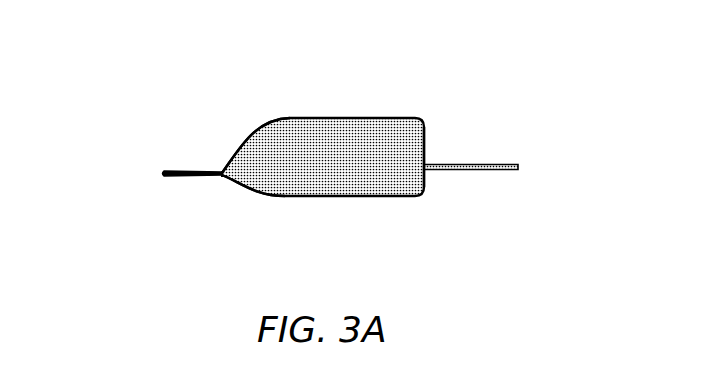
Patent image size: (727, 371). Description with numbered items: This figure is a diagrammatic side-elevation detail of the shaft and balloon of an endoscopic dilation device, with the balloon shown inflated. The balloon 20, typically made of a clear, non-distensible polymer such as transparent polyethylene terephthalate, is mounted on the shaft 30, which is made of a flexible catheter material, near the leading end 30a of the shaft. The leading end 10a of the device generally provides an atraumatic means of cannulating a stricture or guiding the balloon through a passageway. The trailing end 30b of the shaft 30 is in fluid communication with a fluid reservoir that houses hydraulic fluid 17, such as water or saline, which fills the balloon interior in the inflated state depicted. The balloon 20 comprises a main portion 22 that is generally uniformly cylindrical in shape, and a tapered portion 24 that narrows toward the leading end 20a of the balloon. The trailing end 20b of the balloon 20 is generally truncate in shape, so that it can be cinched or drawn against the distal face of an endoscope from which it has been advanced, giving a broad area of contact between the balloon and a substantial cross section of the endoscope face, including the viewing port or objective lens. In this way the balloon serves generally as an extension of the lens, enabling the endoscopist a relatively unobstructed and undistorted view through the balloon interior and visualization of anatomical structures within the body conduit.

The balloon 20 is at (327, 143).
The main portion 22 is at (323, 155).
The hydraulic fluid 17 is at (335, 163).
The tapered portion 24 is at (244, 140).
The leading end of the balloon 20a is at (222, 177).
The trailing end of the balloon 20b is at (420, 196).
The leading end of the dilation device 10a is at (132, 217).
The leading end of the shaft 30a is at (163, 177).
The shaft 30 is at (502, 161).
The trailing end of the shaft 30b is at (518, 166).